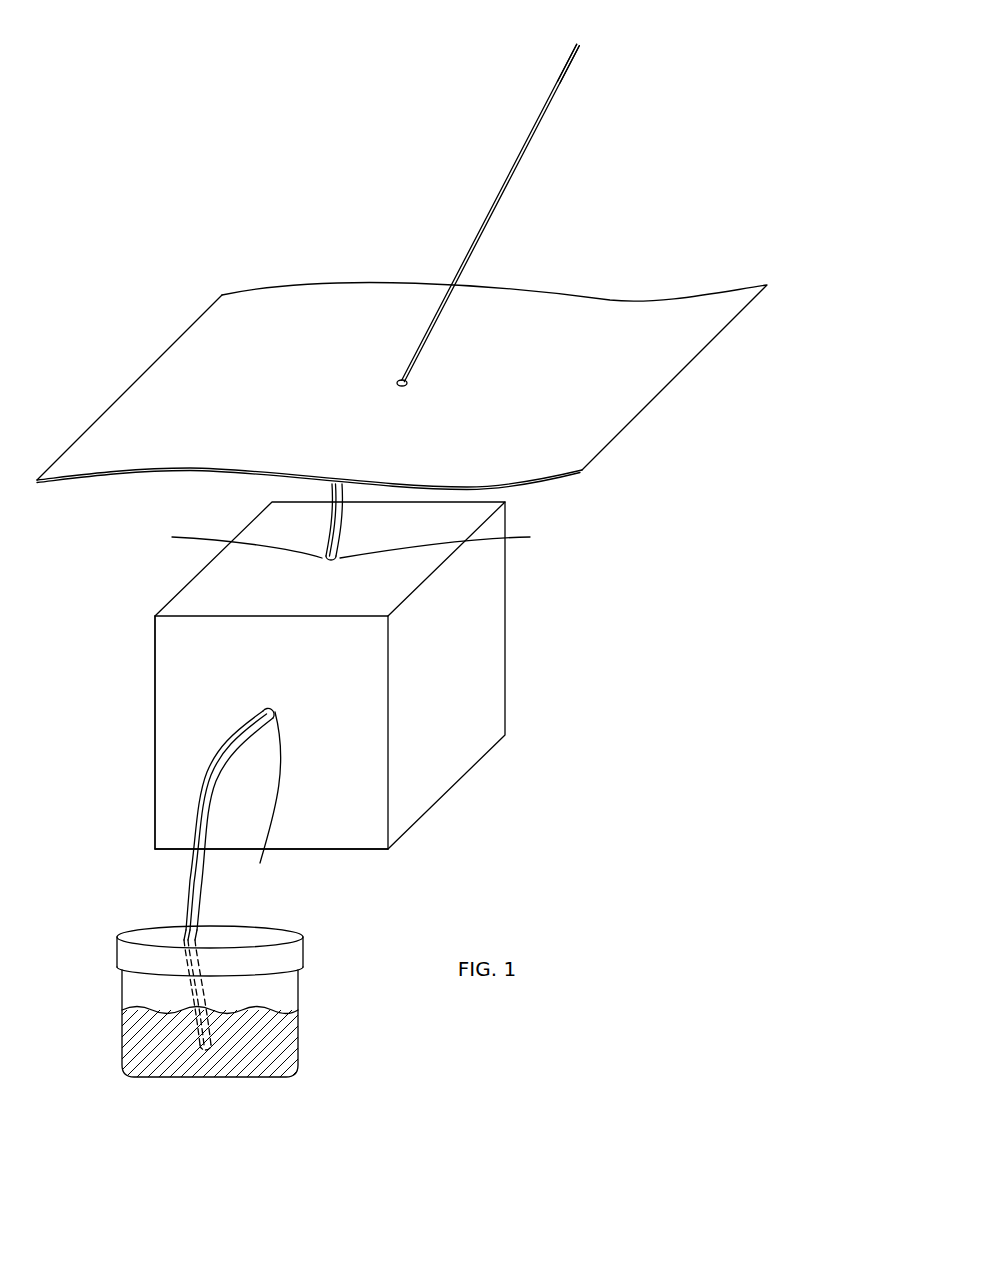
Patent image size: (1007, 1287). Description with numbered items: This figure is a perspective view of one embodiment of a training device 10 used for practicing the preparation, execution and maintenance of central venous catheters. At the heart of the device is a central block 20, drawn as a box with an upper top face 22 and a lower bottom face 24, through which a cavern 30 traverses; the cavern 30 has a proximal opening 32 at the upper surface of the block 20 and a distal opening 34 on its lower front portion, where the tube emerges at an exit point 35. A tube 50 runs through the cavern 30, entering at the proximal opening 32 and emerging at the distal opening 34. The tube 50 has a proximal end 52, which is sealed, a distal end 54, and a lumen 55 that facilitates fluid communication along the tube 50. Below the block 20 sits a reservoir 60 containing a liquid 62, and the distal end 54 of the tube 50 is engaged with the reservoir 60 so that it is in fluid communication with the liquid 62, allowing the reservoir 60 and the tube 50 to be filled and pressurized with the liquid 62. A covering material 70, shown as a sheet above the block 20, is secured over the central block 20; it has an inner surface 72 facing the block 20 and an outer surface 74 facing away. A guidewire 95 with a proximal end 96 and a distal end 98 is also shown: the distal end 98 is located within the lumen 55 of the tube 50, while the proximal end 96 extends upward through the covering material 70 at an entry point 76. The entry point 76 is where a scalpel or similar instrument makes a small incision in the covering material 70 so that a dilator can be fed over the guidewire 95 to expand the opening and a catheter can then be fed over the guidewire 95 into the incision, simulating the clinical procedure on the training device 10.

The training device 10 is at (207, 170).
The central block 20 is at (325, 717).
The top wall 22 is at (218, 580).
The bottom wall 24 is at (330, 849).
The cavern 30 is at (231, 541).
The proximal opening 32 is at (450, 541).
The distal opening 34 is at (257, 803).
The outlet port 35 is at (267, 712).
The tube 50 is at (185, 924).
The proximal end 52 is at (322, 490).
The distal end 54 is at (210, 1060).
The lumen 55 is at (195, 860).
The reservoir 60 is at (199, 1001).
The liquid 62 is at (283, 1045).
The covering material 70 is at (402, 394).
The inner surface 72 is at (98, 482).
The outer surface 74 is at (172, 370).
The entry point 76 is at (398, 378).
The guidewire 95 is at (522, 148).
The proximal end 96 is at (558, 88).
The distal end 98 is at (207, 1058).